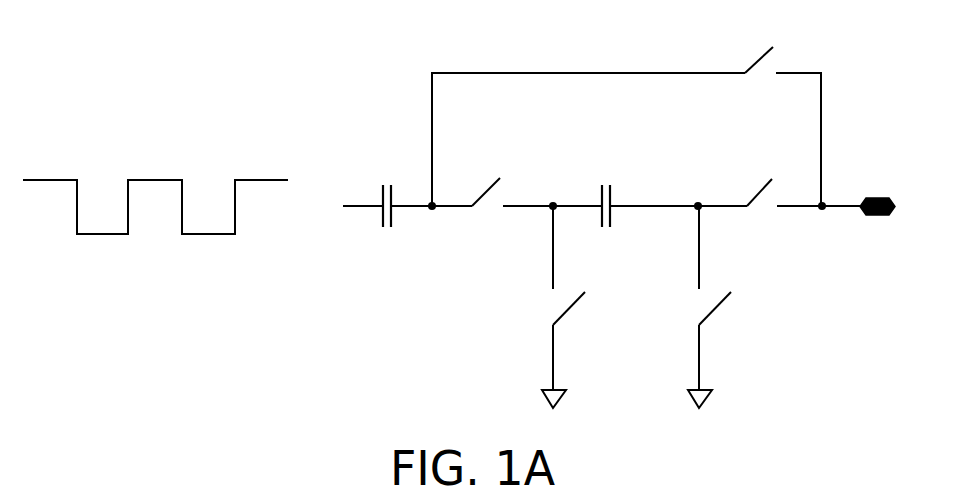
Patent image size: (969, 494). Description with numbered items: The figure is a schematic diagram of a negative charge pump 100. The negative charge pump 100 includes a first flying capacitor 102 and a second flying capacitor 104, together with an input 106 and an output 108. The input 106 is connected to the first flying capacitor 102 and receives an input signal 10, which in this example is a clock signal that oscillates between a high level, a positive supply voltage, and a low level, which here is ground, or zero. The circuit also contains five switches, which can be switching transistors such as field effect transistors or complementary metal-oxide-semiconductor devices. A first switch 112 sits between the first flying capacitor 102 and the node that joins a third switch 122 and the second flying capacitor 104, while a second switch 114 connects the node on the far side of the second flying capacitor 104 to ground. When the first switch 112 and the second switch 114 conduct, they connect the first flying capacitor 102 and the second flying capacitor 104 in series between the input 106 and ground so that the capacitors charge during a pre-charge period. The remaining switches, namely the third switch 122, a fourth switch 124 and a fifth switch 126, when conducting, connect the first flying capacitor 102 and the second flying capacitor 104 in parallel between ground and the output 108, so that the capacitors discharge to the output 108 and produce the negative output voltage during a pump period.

The input signal 10 is at (59, 236).
The negative charge pump 100 is at (898, 428).
The first flying capacitor 102 is at (390, 208).
The second flying capacitor 104 is at (608, 208).
The input 106 is at (317, 229).
The output 108 is at (880, 213).
The switch S1 112 is at (479, 199).
The switch S2 114 is at (704, 319).
The switch S3 122 is at (534, 326).
The switch S4 124 is at (762, 197).
The switch S5 126 is at (765, 62).